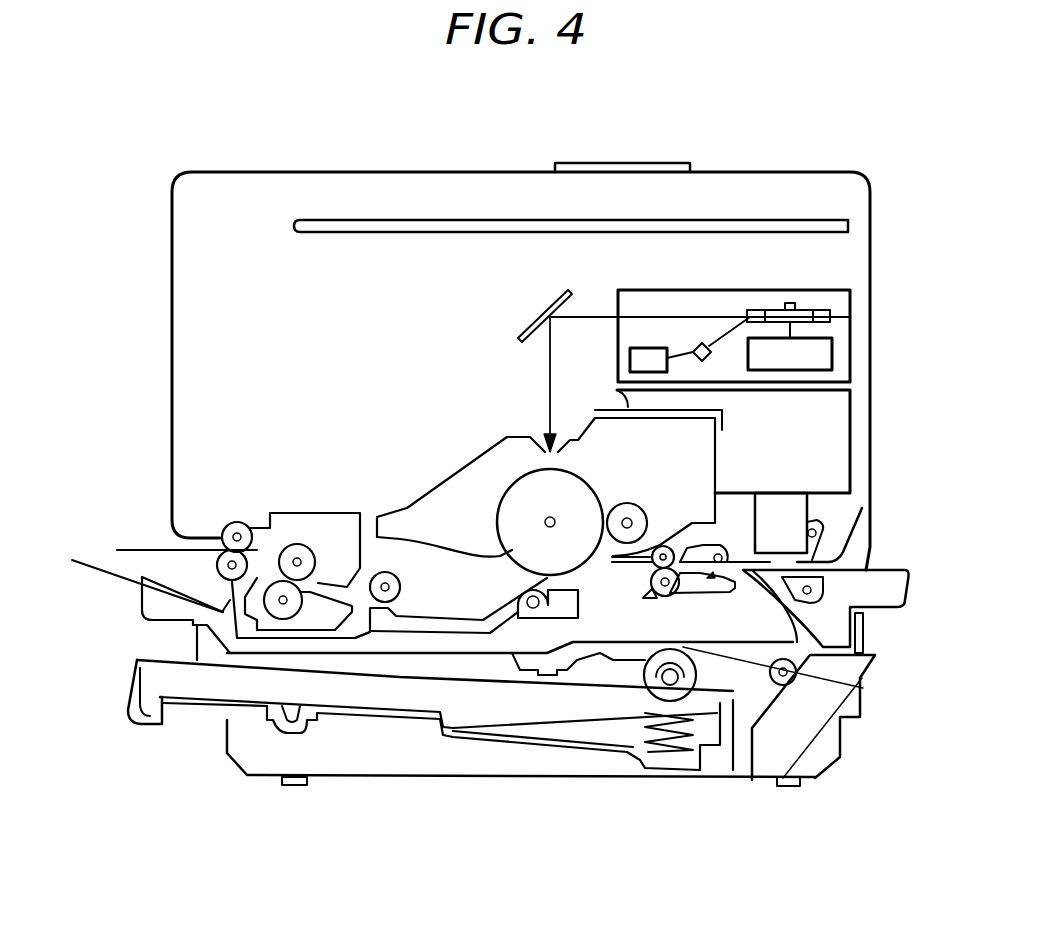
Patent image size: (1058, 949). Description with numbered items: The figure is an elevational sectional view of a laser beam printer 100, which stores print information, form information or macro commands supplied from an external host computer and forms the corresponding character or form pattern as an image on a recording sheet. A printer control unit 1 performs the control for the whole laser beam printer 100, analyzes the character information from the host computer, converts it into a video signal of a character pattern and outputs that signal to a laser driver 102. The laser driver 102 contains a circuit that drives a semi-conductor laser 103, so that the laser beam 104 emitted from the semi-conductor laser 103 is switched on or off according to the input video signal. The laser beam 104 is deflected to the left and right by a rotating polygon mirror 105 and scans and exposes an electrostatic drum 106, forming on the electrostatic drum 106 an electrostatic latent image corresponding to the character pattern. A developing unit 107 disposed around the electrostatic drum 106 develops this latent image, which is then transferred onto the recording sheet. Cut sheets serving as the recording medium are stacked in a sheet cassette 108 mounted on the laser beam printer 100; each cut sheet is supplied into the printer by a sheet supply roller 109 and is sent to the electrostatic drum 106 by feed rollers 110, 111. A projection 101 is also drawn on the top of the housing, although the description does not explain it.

The printer control unit 1 is at (848, 225).
The laser beam printer 100 is at (790, 172).
The projection on housing top 101 is at (640, 162).
The laser driver 102 is at (630, 353).
The semi-conductor laser 103 is at (710, 357).
The laser beam 104 is at (682, 315).
The rotating polygon mirror 105 is at (850, 317).
The electrostatic drum 106 is at (517, 477).
The developing unit 107 is at (400, 500).
The sheet cassette 108 is at (125, 707).
The sheet supply roller 109 is at (647, 675).
The feed roller 110 is at (800, 677).
The feed roller 111 is at (660, 600).